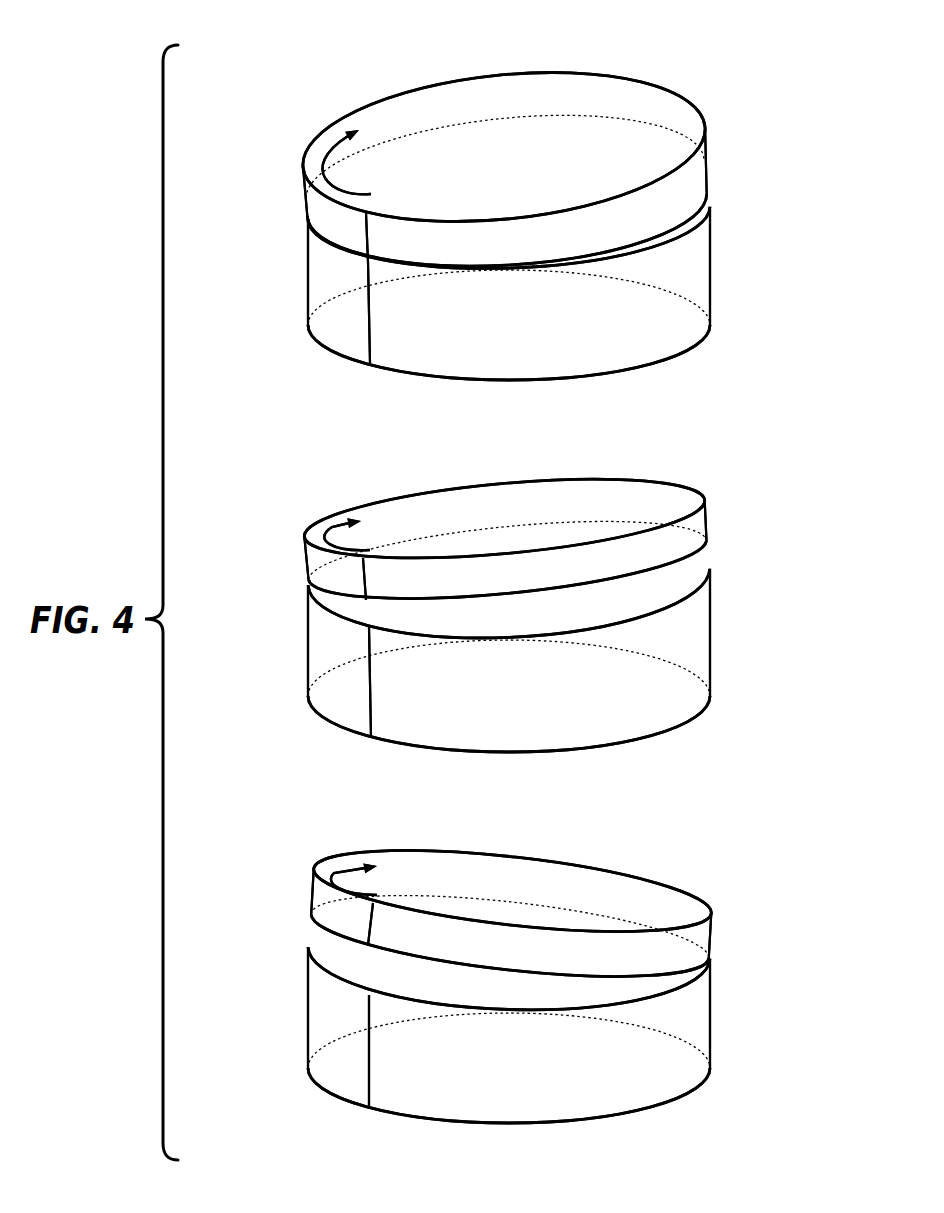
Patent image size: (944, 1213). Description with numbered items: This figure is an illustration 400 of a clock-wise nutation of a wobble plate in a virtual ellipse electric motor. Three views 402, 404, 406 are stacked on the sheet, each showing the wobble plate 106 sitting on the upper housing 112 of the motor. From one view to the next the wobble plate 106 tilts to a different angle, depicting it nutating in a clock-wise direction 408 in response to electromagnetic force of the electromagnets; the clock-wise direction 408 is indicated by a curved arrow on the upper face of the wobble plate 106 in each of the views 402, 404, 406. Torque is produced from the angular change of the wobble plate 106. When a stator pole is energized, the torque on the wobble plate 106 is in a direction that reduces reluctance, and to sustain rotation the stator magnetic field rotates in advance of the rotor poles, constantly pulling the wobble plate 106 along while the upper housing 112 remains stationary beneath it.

The sequence of container lid rotation states 400 is at (756, 40).
The view 402 is at (264, 237).
The view 404 is at (264, 608).
The view 406 is at (264, 981).
The wobble plate 106 is at (710, 153).
The upper housing 112 is at (712, 283).
The clock-wise direction 408 is at (332, 152).